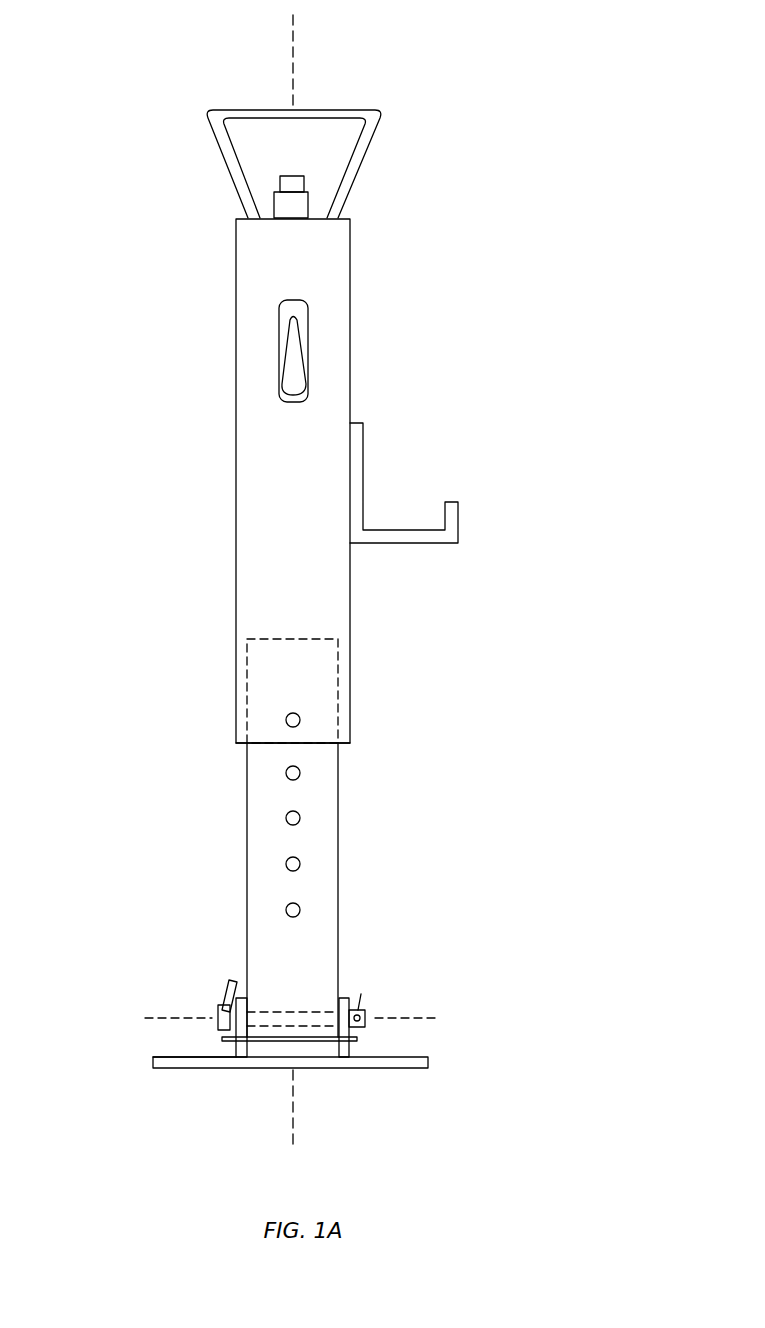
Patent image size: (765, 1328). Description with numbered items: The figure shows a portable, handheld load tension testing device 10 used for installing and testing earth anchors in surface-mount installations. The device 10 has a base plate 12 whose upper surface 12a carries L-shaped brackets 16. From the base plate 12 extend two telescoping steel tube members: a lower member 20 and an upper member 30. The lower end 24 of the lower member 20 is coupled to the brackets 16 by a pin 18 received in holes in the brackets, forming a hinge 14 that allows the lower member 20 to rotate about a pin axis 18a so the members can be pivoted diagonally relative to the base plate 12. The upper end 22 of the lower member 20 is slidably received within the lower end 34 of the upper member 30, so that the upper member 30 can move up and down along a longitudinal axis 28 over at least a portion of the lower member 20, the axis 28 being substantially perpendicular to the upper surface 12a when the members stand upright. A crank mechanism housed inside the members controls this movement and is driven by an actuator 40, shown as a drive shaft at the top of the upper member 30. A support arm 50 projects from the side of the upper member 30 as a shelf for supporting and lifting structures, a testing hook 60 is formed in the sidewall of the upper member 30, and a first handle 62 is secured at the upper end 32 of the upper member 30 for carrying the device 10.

The load tension testing device 10 is at (430, 266).
The base plate 12 is at (413, 1070).
The upper surface 12a is at (175, 1056).
The hinge 14 is at (220, 1010).
The brackets 16 is at (237, 1050).
The pin 18 is at (365, 1015).
The pin axis 18a is at (410, 1018).
The lower member 20 is at (228, 826).
The upper end 22 is at (350, 657).
The lower end 24 is at (338, 985).
The longitudinal axis 28 is at (292, 42).
The upper member 30 is at (198, 420).
The upper end 32 is at (236, 238).
The lower end 34 is at (236, 730).
The actuator 40 is at (295, 176).
The support arm 50 is at (465, 503).
The testing hook 60 is at (306, 370).
The first handle 62 is at (361, 110).